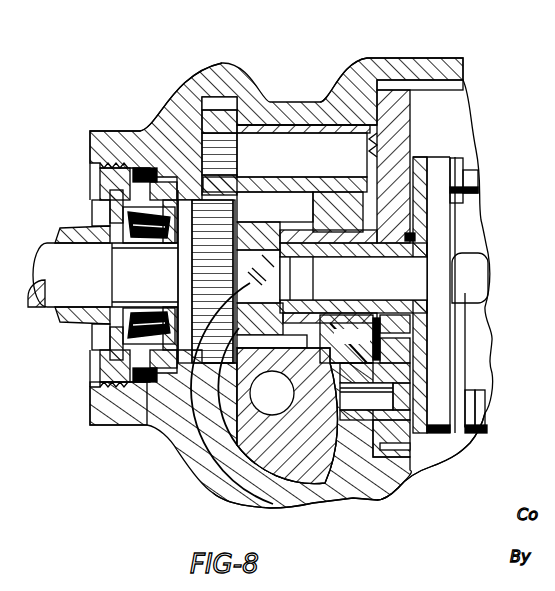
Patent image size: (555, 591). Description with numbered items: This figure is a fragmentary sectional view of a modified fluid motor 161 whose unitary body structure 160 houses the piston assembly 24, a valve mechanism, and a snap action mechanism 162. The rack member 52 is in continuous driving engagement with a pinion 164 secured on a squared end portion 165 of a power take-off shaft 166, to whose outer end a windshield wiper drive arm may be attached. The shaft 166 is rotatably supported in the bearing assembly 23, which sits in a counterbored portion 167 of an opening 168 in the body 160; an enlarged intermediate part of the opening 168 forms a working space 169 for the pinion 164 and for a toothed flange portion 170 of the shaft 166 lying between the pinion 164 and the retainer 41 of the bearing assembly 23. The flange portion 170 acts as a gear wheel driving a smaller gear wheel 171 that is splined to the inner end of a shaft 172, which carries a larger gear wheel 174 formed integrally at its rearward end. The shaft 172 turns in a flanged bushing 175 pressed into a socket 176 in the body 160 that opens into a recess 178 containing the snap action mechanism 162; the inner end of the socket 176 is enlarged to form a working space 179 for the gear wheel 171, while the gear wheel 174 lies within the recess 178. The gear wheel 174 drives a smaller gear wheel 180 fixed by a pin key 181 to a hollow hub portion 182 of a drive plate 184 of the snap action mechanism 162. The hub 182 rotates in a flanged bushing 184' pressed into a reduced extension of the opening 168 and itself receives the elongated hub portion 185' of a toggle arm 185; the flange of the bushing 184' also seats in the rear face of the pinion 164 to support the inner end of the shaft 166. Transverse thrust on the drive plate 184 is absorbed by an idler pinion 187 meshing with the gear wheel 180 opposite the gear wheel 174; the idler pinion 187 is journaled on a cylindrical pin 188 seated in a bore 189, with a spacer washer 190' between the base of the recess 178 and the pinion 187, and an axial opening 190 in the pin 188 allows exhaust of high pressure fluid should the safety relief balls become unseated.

The bearing assembly 23 is at (75, 190).
The piston assembly 24 is at (310, 472).
The retainer 41 is at (113, 425).
The rack member 52 is at (235, 486).
The unitary body structure 160 is at (120, 147).
The fluid motor 161 is at (148, 74).
The snap action mechanism 162 is at (459, 141).
The pinion 164 is at (210, 442).
The squared end portion 165 is at (148, 427).
The power take-off shaft 166 is at (94, 281).
The counterbored portion 167 is at (92, 180).
The opening 168 is at (92, 210).
The working space 169 is at (285, 205).
The toothed flange portion 170 is at (165, 115).
The gear wheel 171 is at (218, 118).
The shaft 172 is at (267, 143).
The gear wheel 174 is at (385, 107).
The flanged bushing 175 is at (313, 124).
The socket 176 is at (348, 110).
The recess 178 is at (447, 91).
The working space 179 is at (221, 103).
The gear wheel 180 is at (427, 228).
The pin key 181 is at (420, 245).
The hollow hub portion 182 is at (342, 241).
The drive plate 184 is at (435, 270).
The flanged bushing 184' is at (365, 339).
The toggle arm 185 is at (479, 295).
The elongated hub portion 185' is at (332, 295).
The idler pinion 187 is at (433, 461).
The cylindrical pin 188 is at (415, 414).
The bore 189 is at (360, 498).
The axial opening 190 is at (473, 404).
The spacer washer 190' is at (397, 457).